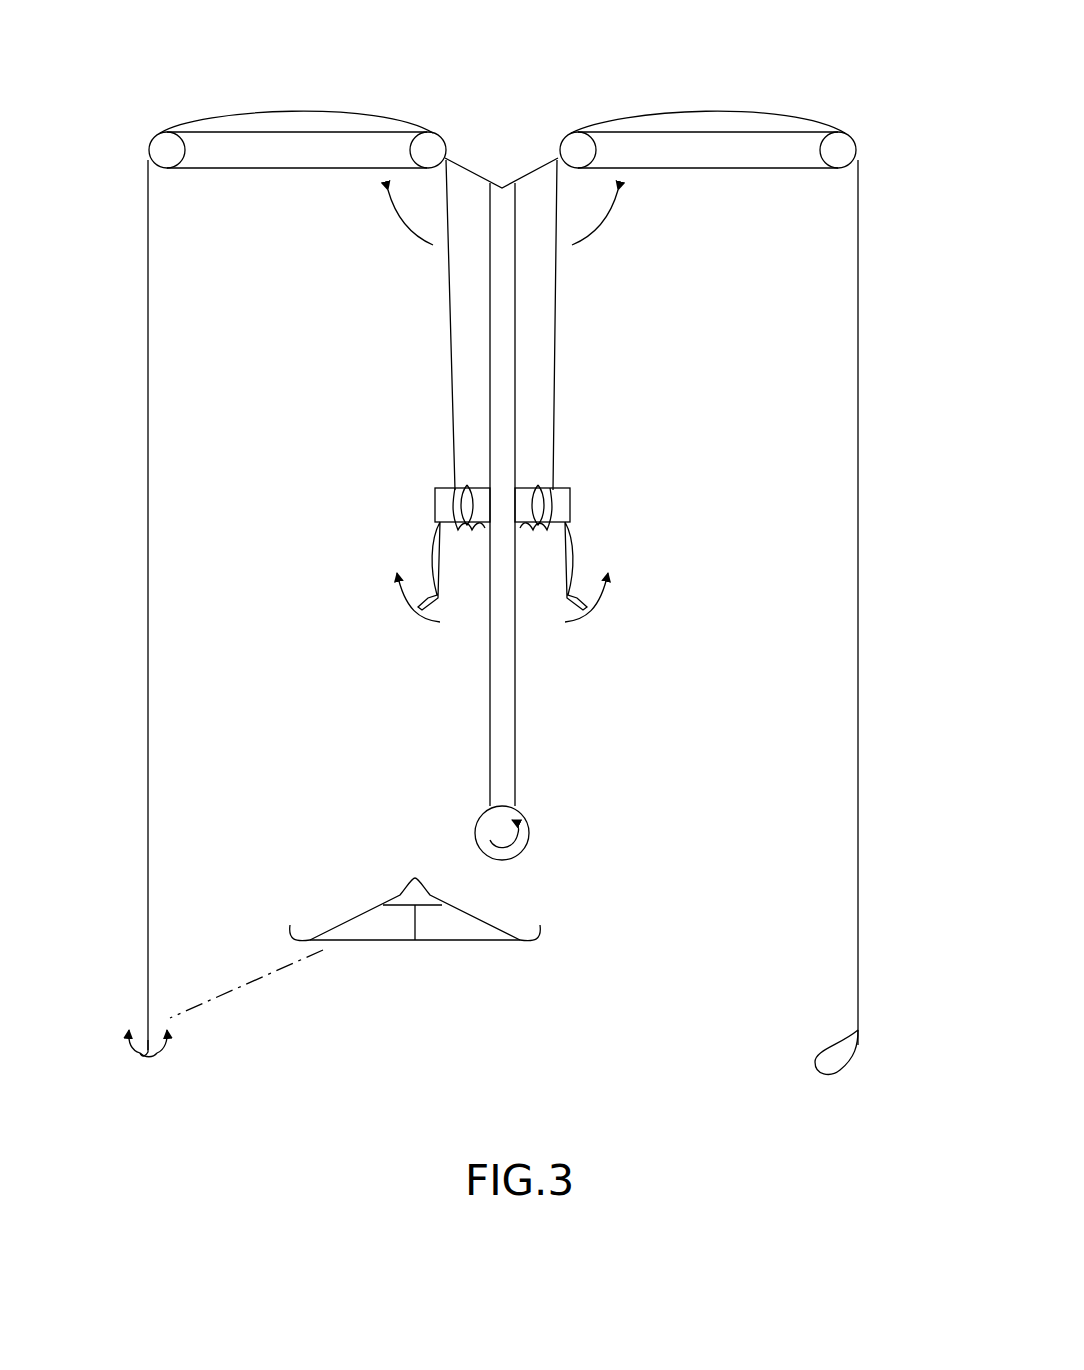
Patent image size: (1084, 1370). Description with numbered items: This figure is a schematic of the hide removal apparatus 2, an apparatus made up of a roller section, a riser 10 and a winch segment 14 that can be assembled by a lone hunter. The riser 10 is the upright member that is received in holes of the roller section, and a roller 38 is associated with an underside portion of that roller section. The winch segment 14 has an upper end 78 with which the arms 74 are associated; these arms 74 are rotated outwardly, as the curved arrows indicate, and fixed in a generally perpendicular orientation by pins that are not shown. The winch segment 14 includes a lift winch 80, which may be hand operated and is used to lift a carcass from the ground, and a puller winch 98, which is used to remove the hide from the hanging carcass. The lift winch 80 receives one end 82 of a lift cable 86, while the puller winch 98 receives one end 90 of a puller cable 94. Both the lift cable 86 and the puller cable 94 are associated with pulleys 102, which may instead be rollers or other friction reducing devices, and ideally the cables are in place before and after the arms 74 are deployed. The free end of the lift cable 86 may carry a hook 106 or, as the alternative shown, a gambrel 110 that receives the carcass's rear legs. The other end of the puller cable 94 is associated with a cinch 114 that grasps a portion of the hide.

The hide removal apparatus 2 is at (235, 86).
The arms 74 is at (350, 145).
The pulleys 102 is at (170, 150).
The upper end 78 is at (504, 145).
The riser 10 is at (515, 704).
The winch segment 14 is at (552, 366).
The lift winch 80 is at (450, 505).
The puller winch 98 is at (570, 503).
The roller 38 is at (529, 833).
The lift cable 86 is at (148, 692).
The puller cable 94 is at (858, 840).
The one end 82 is at (148, 1010).
The hook 106 is at (162, 1053).
The one end 90 is at (855, 1015).
The cinch 114 is at (828, 1078).
The gambrel 110 is at (383, 943).